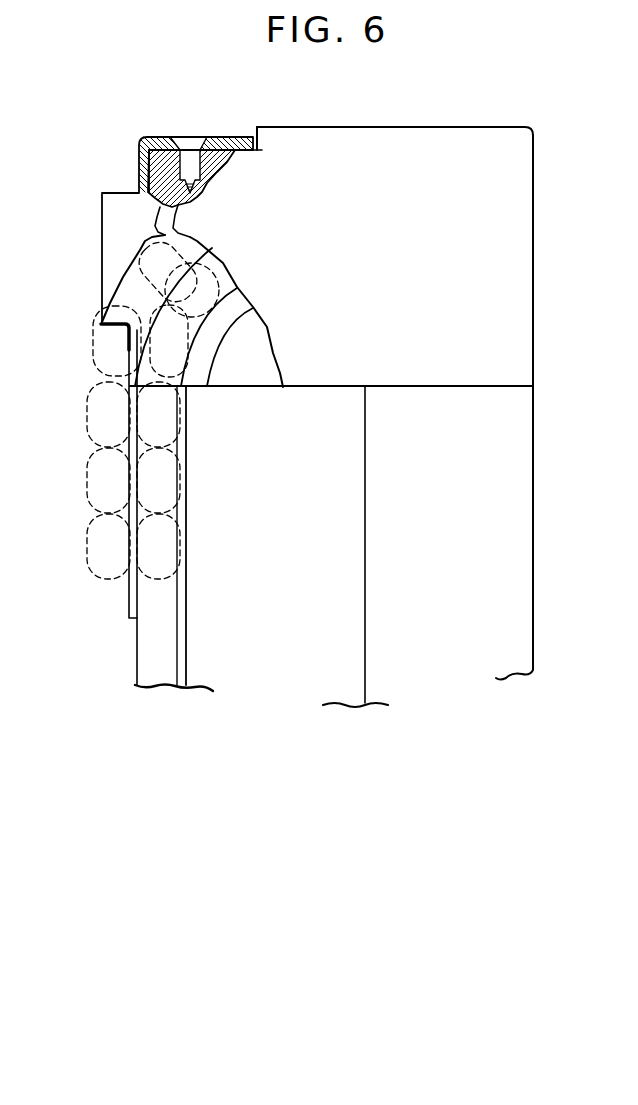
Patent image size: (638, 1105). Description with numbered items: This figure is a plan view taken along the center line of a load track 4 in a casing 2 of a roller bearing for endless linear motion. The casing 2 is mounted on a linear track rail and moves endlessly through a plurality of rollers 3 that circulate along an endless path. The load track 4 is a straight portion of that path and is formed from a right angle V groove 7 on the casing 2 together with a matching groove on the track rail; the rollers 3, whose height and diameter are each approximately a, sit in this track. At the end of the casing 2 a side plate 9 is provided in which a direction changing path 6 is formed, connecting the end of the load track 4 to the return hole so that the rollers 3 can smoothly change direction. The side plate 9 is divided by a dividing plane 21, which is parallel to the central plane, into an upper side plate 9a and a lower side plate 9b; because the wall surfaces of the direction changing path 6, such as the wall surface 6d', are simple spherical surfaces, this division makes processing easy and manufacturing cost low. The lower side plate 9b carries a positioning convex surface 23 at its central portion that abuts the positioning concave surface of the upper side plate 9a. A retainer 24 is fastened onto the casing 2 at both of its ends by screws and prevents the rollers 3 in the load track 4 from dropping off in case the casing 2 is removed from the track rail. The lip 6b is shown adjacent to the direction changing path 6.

The casing 2 is at (505, 472).
The roller 3 is at (100, 548).
The load track 4 is at (156, 632).
The direction changing path 6 is at (127, 297).
The seal lip 6b is at (190, 327).
The wall surface 6d' is at (107, 425).
The right angle V groove 7 is at (153, 672).
The side plate 9 is at (540, 270).
The upper side plate 9a is at (415, 150).
The lower side plate 9b is at (113, 218).
The dividing plane 21 is at (122, 201).
The positioning convex surface 23 is at (237, 303).
The retainer 24 is at (160, 137).